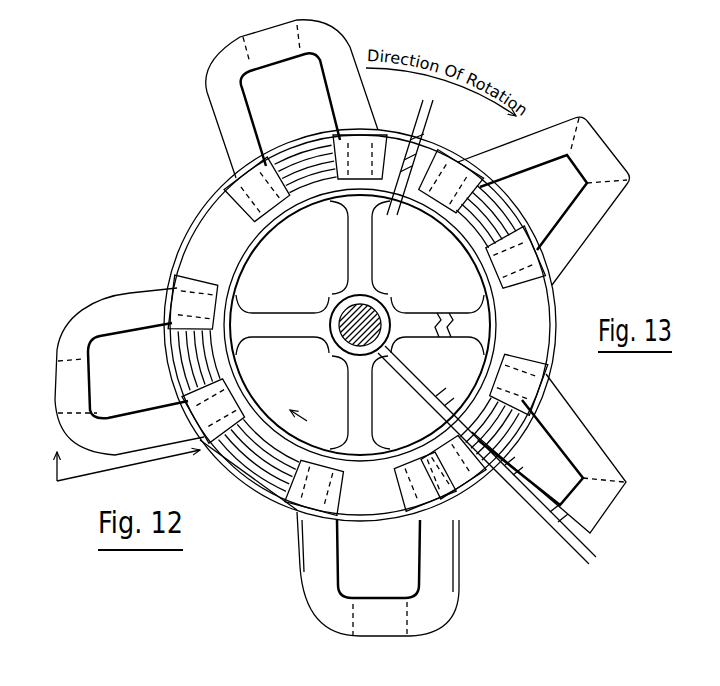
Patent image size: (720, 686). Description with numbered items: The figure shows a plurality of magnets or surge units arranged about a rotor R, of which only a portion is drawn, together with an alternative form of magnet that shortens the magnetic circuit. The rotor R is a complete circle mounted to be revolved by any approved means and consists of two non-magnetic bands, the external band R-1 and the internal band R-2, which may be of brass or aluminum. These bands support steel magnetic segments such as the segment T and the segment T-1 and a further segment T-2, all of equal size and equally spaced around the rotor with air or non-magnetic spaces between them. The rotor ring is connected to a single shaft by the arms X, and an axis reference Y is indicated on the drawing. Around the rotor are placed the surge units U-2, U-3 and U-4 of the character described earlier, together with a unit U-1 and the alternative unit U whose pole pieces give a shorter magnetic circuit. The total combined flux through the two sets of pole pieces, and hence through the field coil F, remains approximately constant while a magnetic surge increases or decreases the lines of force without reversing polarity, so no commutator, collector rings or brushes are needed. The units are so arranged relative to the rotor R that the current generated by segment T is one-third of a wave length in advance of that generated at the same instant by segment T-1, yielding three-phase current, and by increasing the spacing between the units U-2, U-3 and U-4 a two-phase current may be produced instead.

In FIG. 12, the rotor R is at (352, 325).
In FIG. 12, the external band R-1 is at (245, 262).
In FIG. 12, the internal band R-2 is at (206, 188).
In FIG. 12, the magnetic segment T is at (299, 458).
In FIG. 12, the magnetic segment T-1 is at (198, 253).
In FIG. 12, the coil winding T-2 is at (309, 179).
In FIG. 12, the arms X is at (284, 324).
In FIG. 12, the reference axis Y is at (176, 437).
In FIG. 12, the field coil F is at (341, 340).
In FIG. 13, the surge unit U is at (603, 518).
In FIG. 12, the U-shaped core U-1 is at (601, 158).
In FIG. 12, the surge unit U-2 is at (283, 44).
In FIG. 12, the surge unit U-3 is at (76, 399).
In FIG. 12, the surge unit U-4 is at (375, 622).